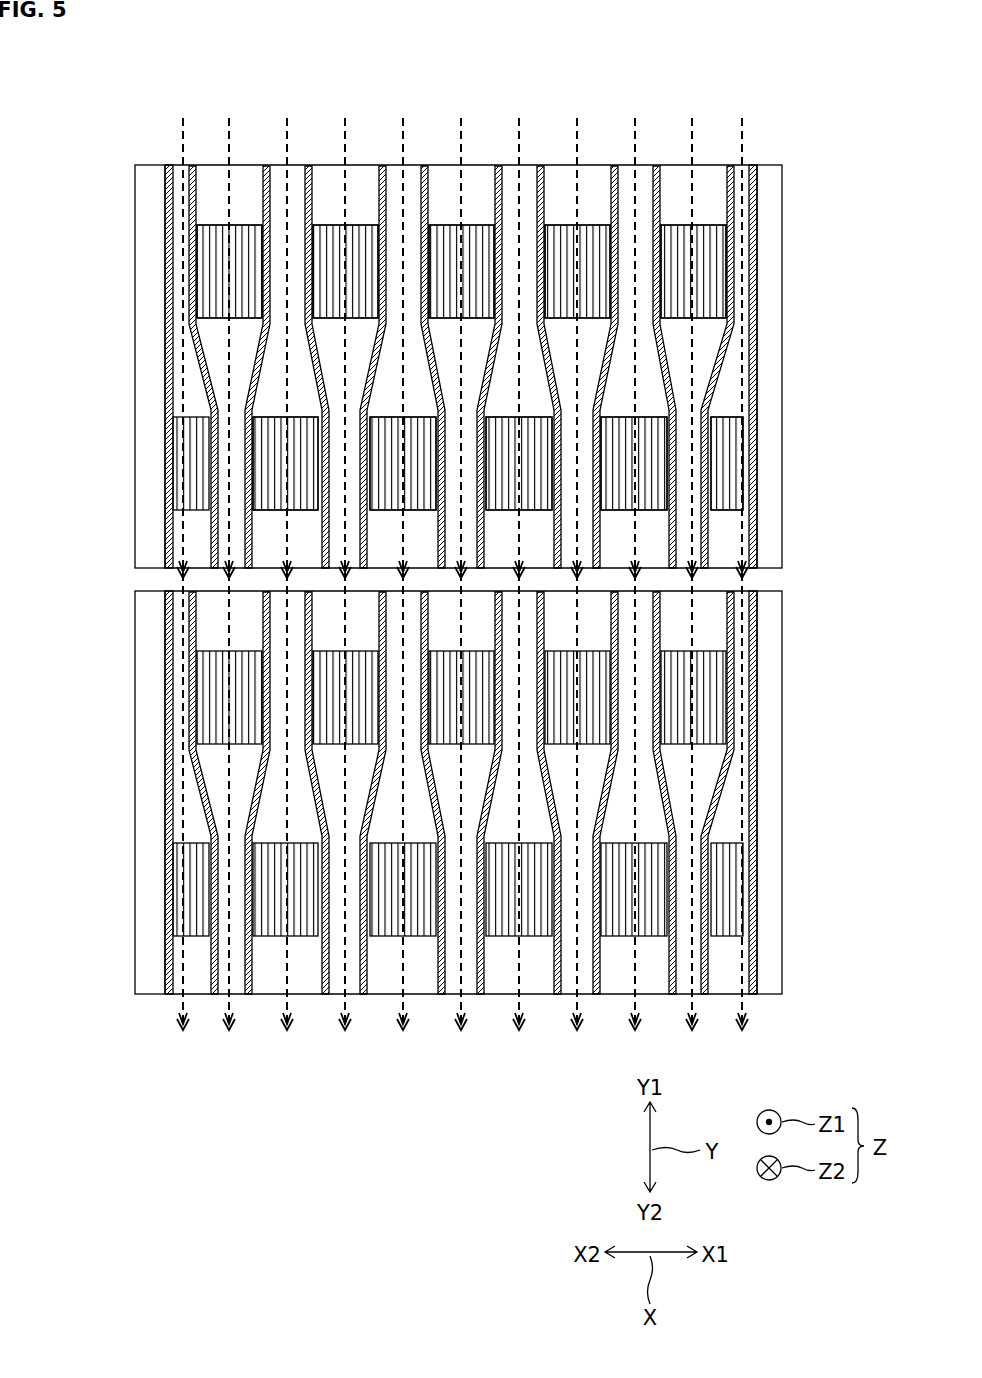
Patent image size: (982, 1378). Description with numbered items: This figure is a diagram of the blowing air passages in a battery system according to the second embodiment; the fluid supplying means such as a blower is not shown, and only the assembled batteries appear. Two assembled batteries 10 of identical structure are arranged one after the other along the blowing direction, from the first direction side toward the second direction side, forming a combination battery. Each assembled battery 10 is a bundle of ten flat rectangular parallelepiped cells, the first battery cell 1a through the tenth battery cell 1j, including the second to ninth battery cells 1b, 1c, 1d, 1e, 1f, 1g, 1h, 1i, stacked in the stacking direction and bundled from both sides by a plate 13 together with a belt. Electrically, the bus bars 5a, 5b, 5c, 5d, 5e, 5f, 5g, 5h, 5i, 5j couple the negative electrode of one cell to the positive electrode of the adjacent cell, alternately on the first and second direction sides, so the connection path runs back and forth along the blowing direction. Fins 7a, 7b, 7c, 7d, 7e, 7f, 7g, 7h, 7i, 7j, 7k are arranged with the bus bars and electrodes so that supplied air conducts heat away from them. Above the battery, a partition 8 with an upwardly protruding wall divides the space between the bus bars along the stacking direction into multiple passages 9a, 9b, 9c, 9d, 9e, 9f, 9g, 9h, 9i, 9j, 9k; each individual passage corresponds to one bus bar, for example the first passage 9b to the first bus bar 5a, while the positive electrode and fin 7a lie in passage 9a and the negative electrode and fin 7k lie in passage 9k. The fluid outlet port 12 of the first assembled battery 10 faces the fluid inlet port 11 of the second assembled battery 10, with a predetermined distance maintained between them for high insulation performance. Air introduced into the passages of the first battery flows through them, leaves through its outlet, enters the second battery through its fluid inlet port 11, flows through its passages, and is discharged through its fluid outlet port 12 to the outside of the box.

The first battery cell 1a is at (178, 193).
The second battery cell 1b is at (240, 205).
The third battery cell 1c is at (288, 178).
The fourth battery cell 1d is at (343, 205).
The fifth battery cell 1e is at (445, 205).
The sixth battery cell 1f is at (508, 176).
The seventh battery cell 1g is at (560, 200).
The eighth battery cell 1h is at (618, 395).
The ninth battery cell 1i is at (666, 176).
The tenth battery cell 1j is at (738, 178).
The first bus bar 5a is at (235, 223).
The second bus bar 5b is at (263, 498).
The third bus bar 5c is at (368, 222).
The fourth bus bar 5d is at (405, 422).
The fifth bus bar 5e is at (470, 223).
The sixth bus bar 5f is at (532, 422).
The seventh bus bar 5g is at (587, 224).
The eighth bus bar 5h is at (655, 456).
The ninth bus bar 5i is at (687, 224).
The bus bar 5j is at (735, 488).
The fin 7a is at (192, 436).
The fin 7b is at (215, 222).
The fin 7c is at (272, 467).
The fin 7d is at (327, 222).
The fin 7e is at (392, 422).
The fin 7f is at (450, 222).
The fin 7g is at (505, 422).
The fin 7h is at (567, 222).
The fin 7i is at (648, 487).
The fin 7j is at (673, 224).
The fin 7k is at (728, 427).
The partition 8 is at (200, 372).
The passage 9a is at (177, 398).
The first passage 9b is at (205, 338).
The second passage 9c is at (266, 168).
The third passage 9d is at (380, 212).
The fourth passage 9e is at (424, 176).
The fifth passage 9f is at (495, 178).
The sixth passage 9g is at (542, 366).
The seventh passage 9h is at (654, 170).
The eighth passage 9i is at (657, 545).
The ninth passage 9j is at (727, 172).
The passage 9k is at (748, 193).
The assembled battery 10 is at (807, 275).
The fluid inlet port 11 is at (550, 165).
The fluid outlet port 12 is at (530, 572).
The plate 13 is at (148, 265).